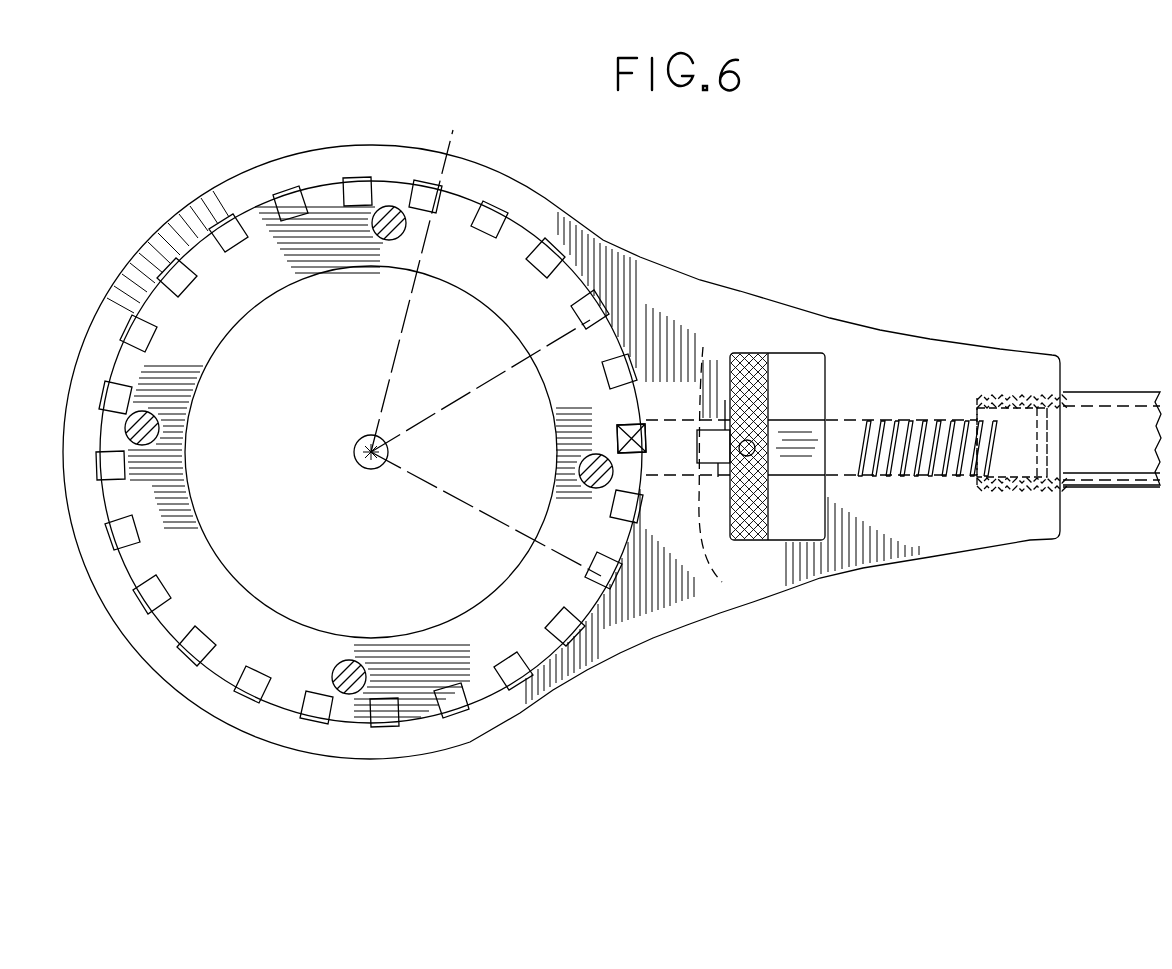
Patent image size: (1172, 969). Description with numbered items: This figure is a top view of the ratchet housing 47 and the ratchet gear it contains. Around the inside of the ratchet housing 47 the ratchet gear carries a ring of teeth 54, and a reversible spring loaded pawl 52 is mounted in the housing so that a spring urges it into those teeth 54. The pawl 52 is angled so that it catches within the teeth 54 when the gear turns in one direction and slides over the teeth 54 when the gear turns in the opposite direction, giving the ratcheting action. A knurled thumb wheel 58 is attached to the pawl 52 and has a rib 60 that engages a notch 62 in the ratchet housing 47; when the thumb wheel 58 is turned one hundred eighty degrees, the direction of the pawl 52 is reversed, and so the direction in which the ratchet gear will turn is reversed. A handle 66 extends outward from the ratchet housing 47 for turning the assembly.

The ratchet housing 47 is at (658, 268).
The pawl 52 is at (617, 424).
The teeth 54 is at (523, 240).
The knurled thumb wheel 58 is at (757, 356).
The rib 60 is at (703, 347).
The notch 62 is at (722, 582).
The handle 66 is at (1117, 393).